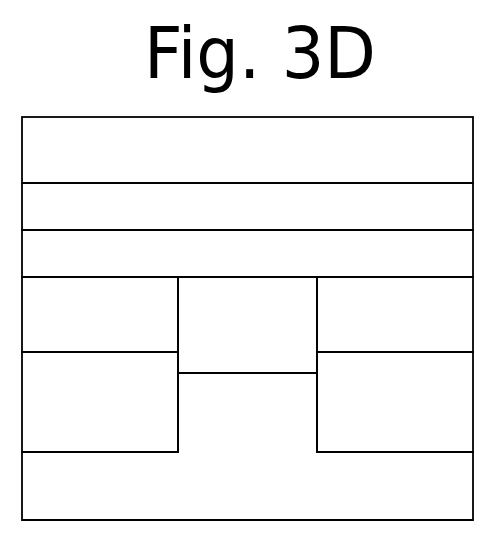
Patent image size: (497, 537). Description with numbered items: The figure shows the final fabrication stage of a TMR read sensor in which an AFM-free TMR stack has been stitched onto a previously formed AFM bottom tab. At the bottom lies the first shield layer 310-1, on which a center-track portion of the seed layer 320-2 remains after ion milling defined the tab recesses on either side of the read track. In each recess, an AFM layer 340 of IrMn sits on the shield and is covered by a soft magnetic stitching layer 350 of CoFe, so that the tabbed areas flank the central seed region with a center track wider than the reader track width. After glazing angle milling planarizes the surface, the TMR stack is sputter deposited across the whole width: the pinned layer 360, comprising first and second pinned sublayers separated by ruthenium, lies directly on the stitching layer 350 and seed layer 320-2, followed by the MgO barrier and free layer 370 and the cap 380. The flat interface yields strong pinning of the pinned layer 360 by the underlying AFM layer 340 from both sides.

The first shield layer 310-1 is at (247, 446).
The seed layer 320-2 is at (247, 325).
The AFM layer 340 is at (247, 402).
The soft magnetic stitching layer 350 is at (247, 314).
The pinned layer 360 is at (247, 253).
The free layer 370 is at (247, 206).
The cap 380 is at (247, 150).